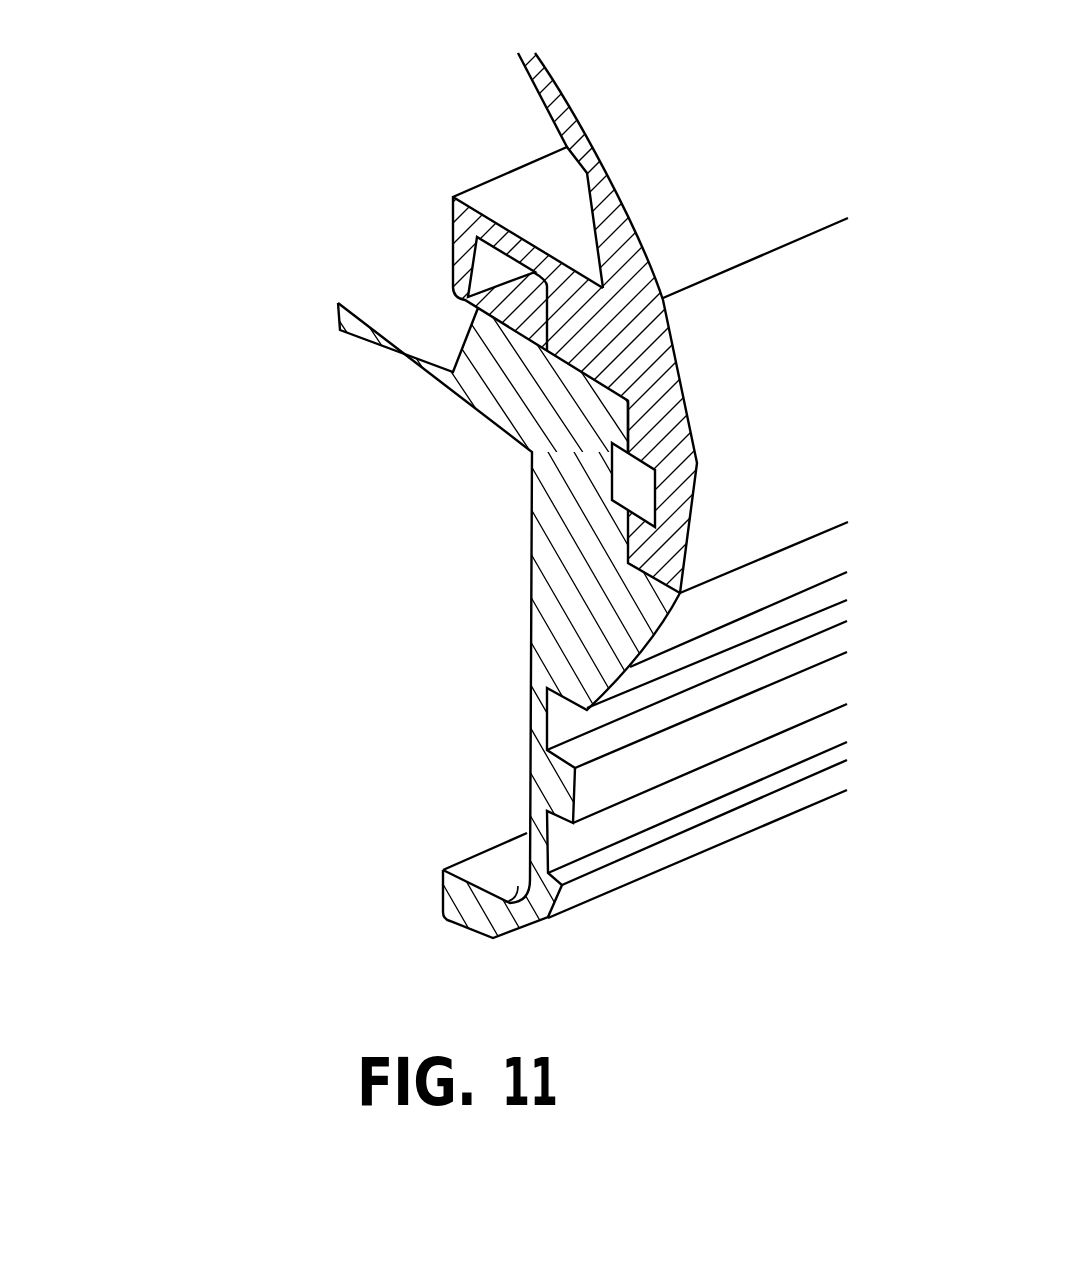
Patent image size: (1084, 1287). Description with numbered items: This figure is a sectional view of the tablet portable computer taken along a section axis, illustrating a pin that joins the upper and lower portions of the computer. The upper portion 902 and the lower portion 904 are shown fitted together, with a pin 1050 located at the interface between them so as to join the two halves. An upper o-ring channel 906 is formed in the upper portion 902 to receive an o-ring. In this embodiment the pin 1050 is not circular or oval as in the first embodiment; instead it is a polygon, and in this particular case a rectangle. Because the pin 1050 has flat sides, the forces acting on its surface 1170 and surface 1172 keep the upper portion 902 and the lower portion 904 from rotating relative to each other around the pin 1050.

The upper portion 902 is at (575, 175).
The lower portion 904 is at (546, 784).
The upper o-ring channel 906 is at (498, 268).
The pin 1050 is at (615, 484).
The surface 1170 is at (650, 446).
The surface 1172 is at (630, 537).